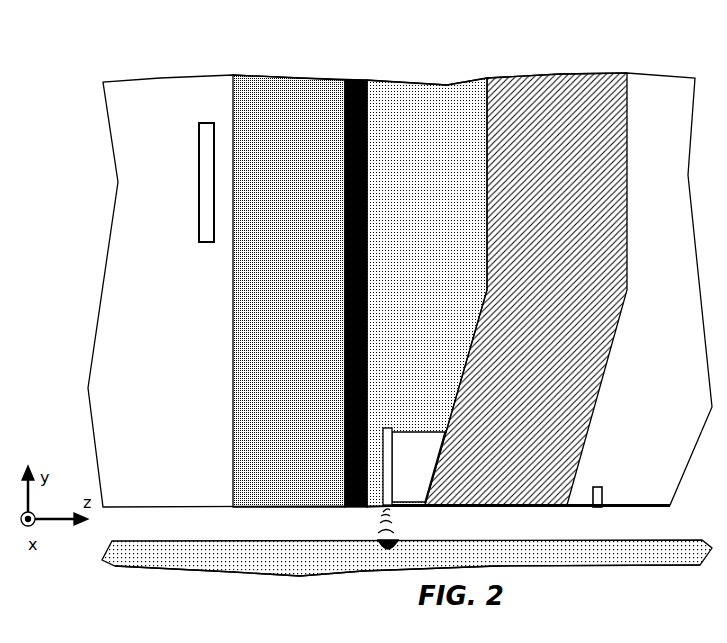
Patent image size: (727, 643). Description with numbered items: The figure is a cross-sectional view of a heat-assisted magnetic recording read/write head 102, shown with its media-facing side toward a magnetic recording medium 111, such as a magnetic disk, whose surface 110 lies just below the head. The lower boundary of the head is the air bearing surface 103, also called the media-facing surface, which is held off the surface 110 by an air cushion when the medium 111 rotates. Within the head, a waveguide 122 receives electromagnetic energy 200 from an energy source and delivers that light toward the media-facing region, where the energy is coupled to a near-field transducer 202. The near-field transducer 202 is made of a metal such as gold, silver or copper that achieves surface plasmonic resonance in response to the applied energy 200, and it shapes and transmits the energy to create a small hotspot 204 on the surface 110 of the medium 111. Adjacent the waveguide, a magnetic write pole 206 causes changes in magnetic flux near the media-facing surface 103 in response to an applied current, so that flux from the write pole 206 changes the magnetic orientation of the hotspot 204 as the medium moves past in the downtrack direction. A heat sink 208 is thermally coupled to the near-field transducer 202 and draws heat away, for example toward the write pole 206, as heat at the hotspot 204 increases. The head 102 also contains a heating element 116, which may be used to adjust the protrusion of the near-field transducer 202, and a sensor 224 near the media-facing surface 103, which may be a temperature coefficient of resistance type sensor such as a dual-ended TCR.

The recording head 102 is at (146, 57).
The waveguide 122 is at (482, 55).
The magnetic write pole 206 is at (568, 73).
The heating element 116 is at (199, 204).
The electromagnetic energy 200 is at (388, 192).
The heat sink 208 is at (407, 488).
The air bearing surface 103 is at (670, 507).
The sensor 224 is at (600, 487).
The near-field transducer 202 is at (377, 522).
The surface 110 is at (530, 550).
The magnetic recording medium 111 is at (553, 550).
The hotspot 204 is at (388, 549).